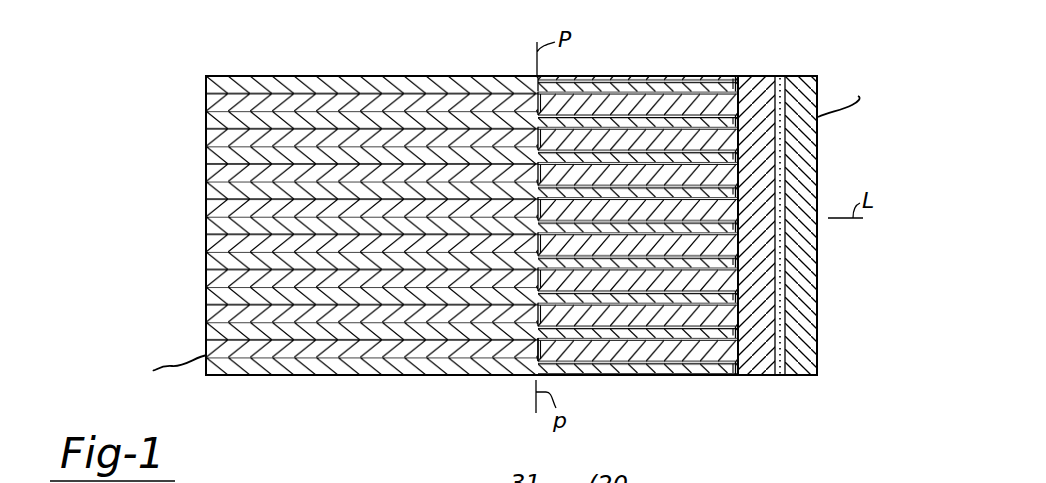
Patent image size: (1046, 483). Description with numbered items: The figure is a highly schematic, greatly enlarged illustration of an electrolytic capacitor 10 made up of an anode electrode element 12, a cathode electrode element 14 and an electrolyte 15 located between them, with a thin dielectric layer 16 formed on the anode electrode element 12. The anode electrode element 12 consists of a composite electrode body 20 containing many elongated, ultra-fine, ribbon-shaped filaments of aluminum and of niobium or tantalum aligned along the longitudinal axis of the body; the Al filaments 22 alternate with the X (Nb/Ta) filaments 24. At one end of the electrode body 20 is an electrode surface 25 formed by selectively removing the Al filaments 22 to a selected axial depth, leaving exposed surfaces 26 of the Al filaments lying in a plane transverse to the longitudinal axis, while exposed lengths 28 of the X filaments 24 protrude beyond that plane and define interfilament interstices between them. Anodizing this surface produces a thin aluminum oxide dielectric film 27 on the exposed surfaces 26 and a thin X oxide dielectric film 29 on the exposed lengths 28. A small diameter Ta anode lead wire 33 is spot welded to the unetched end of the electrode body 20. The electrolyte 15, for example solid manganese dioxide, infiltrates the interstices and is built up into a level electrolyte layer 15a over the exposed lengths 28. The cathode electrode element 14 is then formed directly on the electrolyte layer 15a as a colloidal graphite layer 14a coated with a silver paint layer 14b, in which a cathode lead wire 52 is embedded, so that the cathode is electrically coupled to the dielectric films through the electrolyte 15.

The electrolytic capacitor 10 is at (343, 66).
The anode electrode element 12 is at (318, 386).
The cathode electrode element 14 is at (784, 70).
The colloidal graphite layer 14a is at (779, 264).
The silver paint layer 14b is at (797, 322).
The electrolyte 15 is at (596, 352).
The electrolyte layer 15a is at (766, 76).
The dielectric layer 16 is at (718, 212).
The composite electrode body 20 is at (246, 76).
The Al filaments 22 is at (206, 96).
The X (Nb/Ta) filaments 24 is at (206, 80).
The electrode surface 25 is at (676, 97).
The exposed surfaces of the Al filaments 26 is at (534, 102).
The dielectric oxide film of aluminum oxide 27 is at (532, 352).
The exposed lengths of the X filaments 28 is at (565, 92).
The dielectric oxide film of X oxide 29 is at (720, 378).
The Ta anode lead wire 33 is at (178, 375).
The cathode lead wire 52 is at (846, 100).